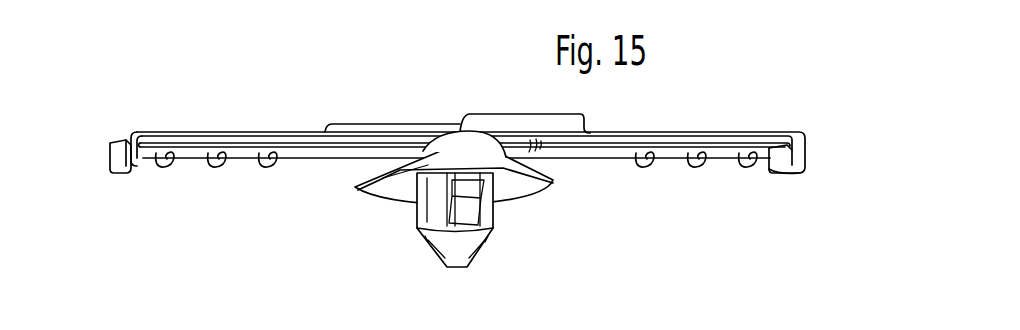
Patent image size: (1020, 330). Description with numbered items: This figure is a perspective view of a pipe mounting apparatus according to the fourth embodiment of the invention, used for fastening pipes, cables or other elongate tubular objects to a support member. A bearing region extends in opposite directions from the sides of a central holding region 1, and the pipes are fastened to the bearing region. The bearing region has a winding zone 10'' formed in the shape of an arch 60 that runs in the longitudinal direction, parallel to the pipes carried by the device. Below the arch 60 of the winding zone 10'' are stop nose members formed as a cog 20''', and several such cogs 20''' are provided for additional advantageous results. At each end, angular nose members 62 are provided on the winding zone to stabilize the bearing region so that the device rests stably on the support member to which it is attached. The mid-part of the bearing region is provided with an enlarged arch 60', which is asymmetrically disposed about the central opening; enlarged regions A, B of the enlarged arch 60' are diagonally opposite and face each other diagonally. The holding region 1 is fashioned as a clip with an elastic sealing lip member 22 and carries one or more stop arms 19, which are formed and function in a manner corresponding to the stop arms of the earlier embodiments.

The holding region 1 is at (435, 172).
The winding zone 10'' is at (450, 134).
The stop arms 19 is at (476, 212).
The cog 20''' is at (456, 187).
The elastic sealing lip member 22 is at (435, 143).
The arch 60 is at (468, 120).
The enlarged arch 60' is at (464, 107).
The angular nose members 62 is at (120, 164).
The enlarged region A is at (355, 126).
The enlarged region B is at (527, 112).